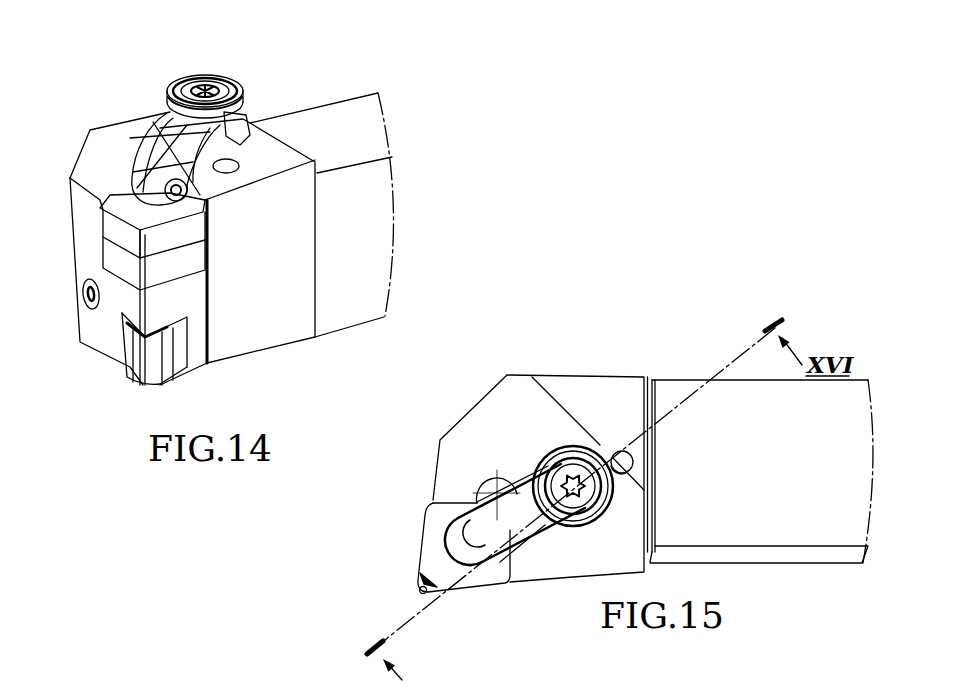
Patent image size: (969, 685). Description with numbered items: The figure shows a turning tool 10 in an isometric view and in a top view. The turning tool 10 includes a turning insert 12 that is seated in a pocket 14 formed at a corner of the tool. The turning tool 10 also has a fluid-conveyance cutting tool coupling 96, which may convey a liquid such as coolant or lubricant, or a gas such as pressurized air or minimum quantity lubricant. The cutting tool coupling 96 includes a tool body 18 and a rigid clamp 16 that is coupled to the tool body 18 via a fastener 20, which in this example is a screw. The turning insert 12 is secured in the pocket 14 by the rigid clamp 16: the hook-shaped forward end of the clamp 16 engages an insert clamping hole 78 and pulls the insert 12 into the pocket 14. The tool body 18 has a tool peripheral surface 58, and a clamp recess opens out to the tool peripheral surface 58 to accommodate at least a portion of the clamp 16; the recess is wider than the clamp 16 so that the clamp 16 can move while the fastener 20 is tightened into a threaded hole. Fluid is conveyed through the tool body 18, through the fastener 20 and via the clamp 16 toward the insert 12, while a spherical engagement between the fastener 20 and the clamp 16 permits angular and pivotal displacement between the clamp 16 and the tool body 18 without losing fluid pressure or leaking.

In FIG. 14, the turning tool 10 is at (438, 134).
In FIG. 15, the turning tool 10 is at (587, 347).
In FIG. 14, the turning insert 12 is at (175, 233).
In FIG. 14, the pocket 14 is at (122, 191).
In FIG. 15, the pocket 14 is at (464, 548).
In FIG. 14, the clamp 16 is at (217, 75).
In FIG. 15, the clamp 16 is at (527, 455).
In FIG. 14, the tool body 18 is at (338, 128).
In FIG. 15, the tool body 18 is at (782, 484).
In FIG. 15, the fastener 20 is at (582, 453).
In FIG. 14, the tool peripheral surface 58 is at (353, 232).
In FIG. 15, the tool peripheral surface 58 is at (825, 400).
In FIG. 15, the insert clamping hole 78 is at (423, 543).
In FIG. 14, the fluid-conveyance cutting tool coupling 96 is at (159, 90).